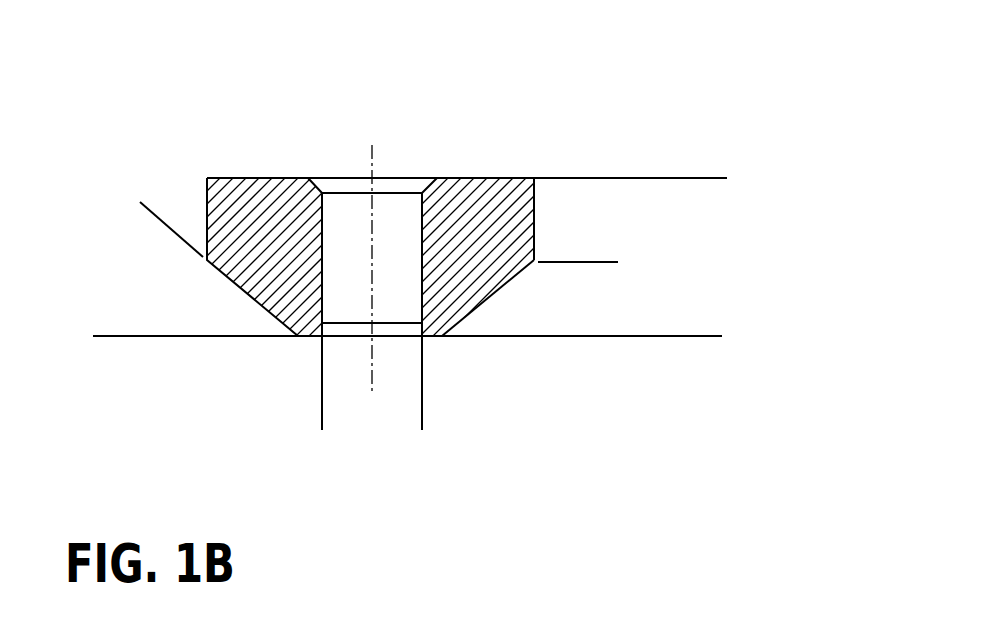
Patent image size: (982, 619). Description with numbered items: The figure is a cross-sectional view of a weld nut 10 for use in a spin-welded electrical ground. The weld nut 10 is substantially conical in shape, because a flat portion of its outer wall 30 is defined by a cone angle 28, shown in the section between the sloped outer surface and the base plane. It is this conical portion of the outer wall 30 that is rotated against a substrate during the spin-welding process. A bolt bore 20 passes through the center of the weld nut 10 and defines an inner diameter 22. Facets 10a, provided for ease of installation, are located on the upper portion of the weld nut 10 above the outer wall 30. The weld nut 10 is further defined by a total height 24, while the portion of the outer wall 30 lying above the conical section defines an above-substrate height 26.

The weld nut 10 is at (692, 135).
The facets 10a is at (538, 207).
The bolt bore 20 is at (343, 343).
The inner diameter 22 is at (322, 413).
The total height 24 is at (718, 178).
The above-substrate height 26 is at (598, 125).
The cone angle 28 is at (148, 215).
The outer wall 30 is at (507, 290).